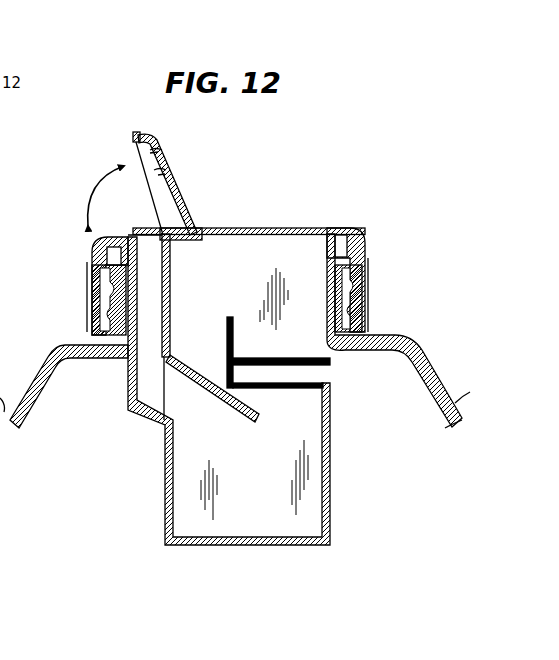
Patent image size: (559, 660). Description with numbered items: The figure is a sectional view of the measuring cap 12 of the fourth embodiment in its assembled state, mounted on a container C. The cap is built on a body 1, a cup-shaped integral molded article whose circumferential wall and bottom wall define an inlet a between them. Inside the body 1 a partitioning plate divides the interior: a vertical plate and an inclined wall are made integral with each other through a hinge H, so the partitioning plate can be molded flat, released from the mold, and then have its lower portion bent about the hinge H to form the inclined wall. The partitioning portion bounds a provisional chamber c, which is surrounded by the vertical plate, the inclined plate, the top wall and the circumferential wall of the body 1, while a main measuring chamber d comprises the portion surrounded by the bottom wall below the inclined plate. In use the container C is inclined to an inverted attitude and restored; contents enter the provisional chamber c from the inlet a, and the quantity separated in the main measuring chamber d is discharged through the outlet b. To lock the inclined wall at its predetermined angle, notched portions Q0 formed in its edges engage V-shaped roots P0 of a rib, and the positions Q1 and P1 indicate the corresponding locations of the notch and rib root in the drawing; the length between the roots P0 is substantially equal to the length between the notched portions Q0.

The measuring cap 12 is at (372, 232).
The body 1 is at (341, 493).
The inlet a is at (322, 372).
The outlet b is at (148, 285).
The provisional chamber c is at (272, 252).
The main measuring chamber d is at (263, 527).
The hinge H is at (130, 384).
The container C is at (32, 368).
The valve open position Q1 is at (197, 385).
The notched portion Q0 is at (235, 397).
The valve open position P1 is at (197, 385).
The V-shaped root of rib P0 is at (240, 397).